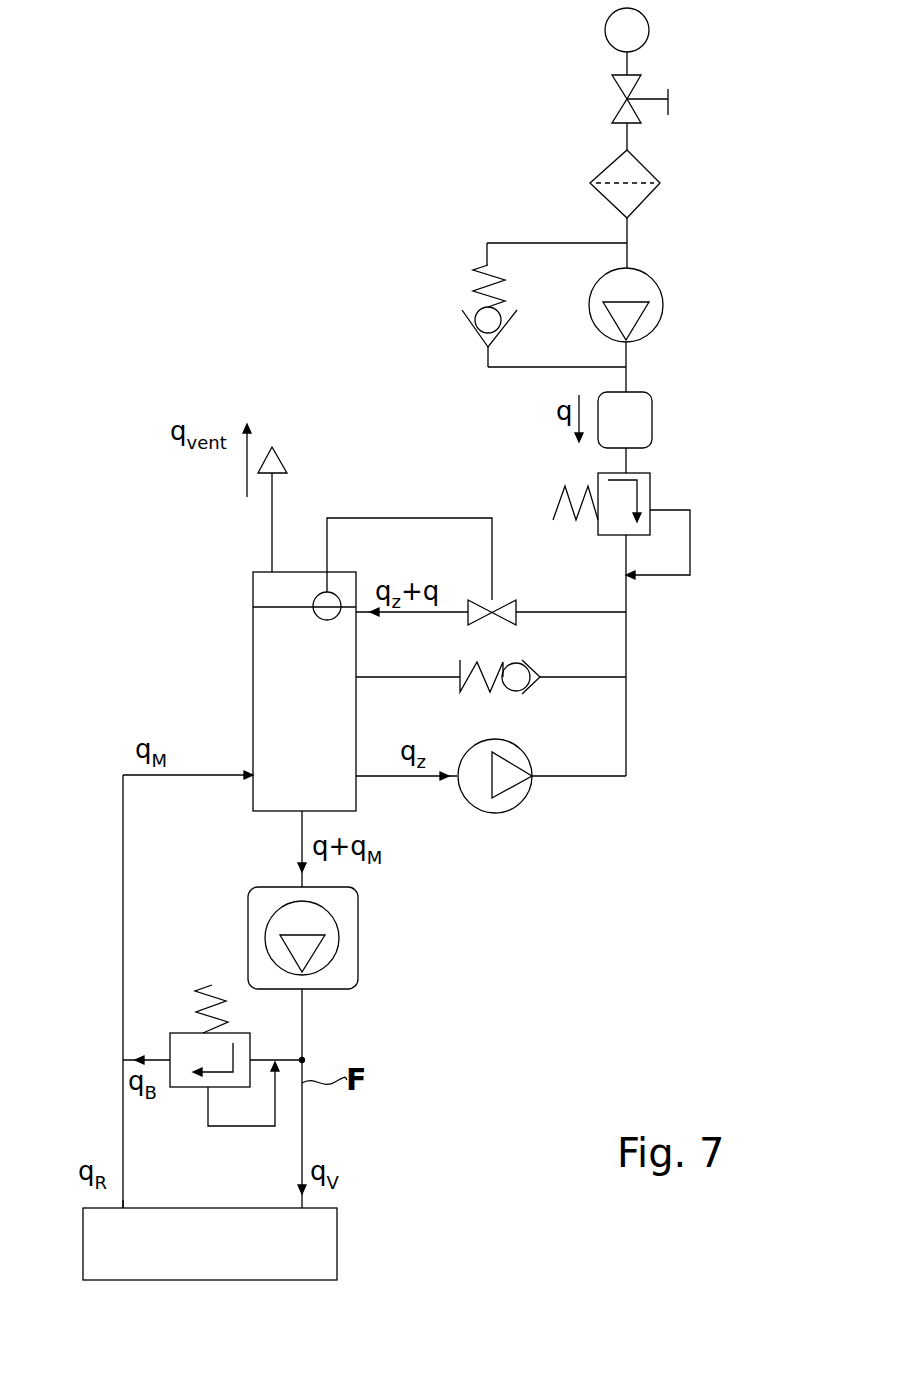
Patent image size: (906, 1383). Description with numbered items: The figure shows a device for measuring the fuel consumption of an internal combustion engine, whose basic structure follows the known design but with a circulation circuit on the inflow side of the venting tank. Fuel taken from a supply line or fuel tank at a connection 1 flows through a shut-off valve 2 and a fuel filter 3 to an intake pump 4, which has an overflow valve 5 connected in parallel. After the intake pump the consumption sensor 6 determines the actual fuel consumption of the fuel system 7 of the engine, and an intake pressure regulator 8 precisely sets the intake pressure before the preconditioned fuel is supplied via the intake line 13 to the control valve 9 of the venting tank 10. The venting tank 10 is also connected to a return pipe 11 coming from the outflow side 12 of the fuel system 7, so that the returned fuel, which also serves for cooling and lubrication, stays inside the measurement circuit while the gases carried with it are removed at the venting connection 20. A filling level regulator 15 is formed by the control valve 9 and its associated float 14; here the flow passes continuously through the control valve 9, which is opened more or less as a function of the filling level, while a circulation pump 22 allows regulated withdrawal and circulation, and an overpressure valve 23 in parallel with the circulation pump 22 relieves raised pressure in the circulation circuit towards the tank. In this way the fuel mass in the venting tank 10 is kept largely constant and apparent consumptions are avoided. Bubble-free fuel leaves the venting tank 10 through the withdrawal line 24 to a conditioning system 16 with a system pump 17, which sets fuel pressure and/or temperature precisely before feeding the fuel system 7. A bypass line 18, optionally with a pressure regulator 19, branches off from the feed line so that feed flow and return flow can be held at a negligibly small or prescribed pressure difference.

The connection 1 is at (652, 29).
The shut-off valve 2 is at (635, 87).
The fuel filter 3 is at (645, 165).
The intake pump 4 is at (665, 302).
The overflow valve 5 is at (477, 330).
The consumption sensor 6 is at (653, 418).
The fuel system 7 is at (340, 1243).
The intake pressure regulator 8 is at (650, 492).
The control valve 9 is at (498, 605).
The venting tank 10 is at (253, 712).
The return pipe 11 is at (123, 927).
The outflow side 12 is at (125, 1208).
The intake line 13 is at (627, 655).
The float 14 is at (317, 617).
The filling level regulator 15 is at (418, 504).
The conditioning system 16 is at (358, 918).
The system pump 17 is at (337, 955).
The bypass line 18 is at (160, 1050).
The pressure regulator 19 is at (195, 1087).
The venting connection 20 is at (272, 552).
The circulation pump 22 is at (517, 805).
The overpressure valve 23 is at (505, 650).
The withdrawal line 24 is at (302, 833).